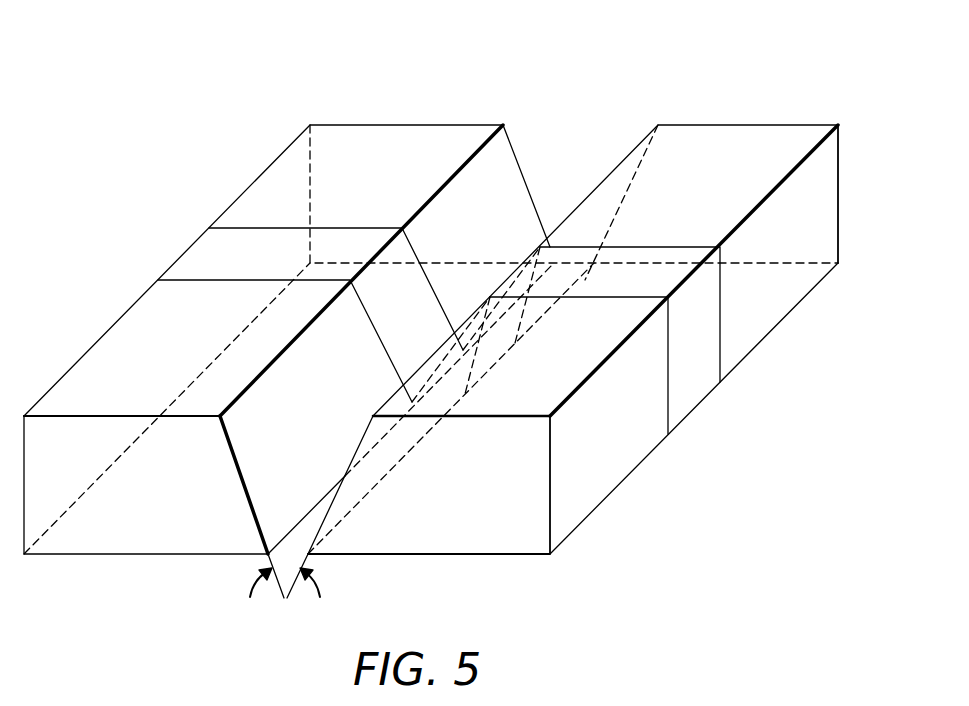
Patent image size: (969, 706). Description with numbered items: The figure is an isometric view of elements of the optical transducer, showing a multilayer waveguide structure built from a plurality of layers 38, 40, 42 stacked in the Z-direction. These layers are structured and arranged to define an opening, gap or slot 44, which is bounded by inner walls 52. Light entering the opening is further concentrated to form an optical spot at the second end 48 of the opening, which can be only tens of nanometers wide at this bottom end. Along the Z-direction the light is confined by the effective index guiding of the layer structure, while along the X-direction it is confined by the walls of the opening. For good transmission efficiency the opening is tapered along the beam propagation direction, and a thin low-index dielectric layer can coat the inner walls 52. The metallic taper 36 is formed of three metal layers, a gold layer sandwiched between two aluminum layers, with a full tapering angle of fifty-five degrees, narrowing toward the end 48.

The metallic taper 36 is at (775, 85).
The layer 38 is at (610, 475).
The layer 40 is at (692, 398).
The layer 42 is at (753, 322).
The opening 44 is at (568, 155).
The second end of the opening 48 is at (272, 547).
The inner walls 52 is at (505, 158).